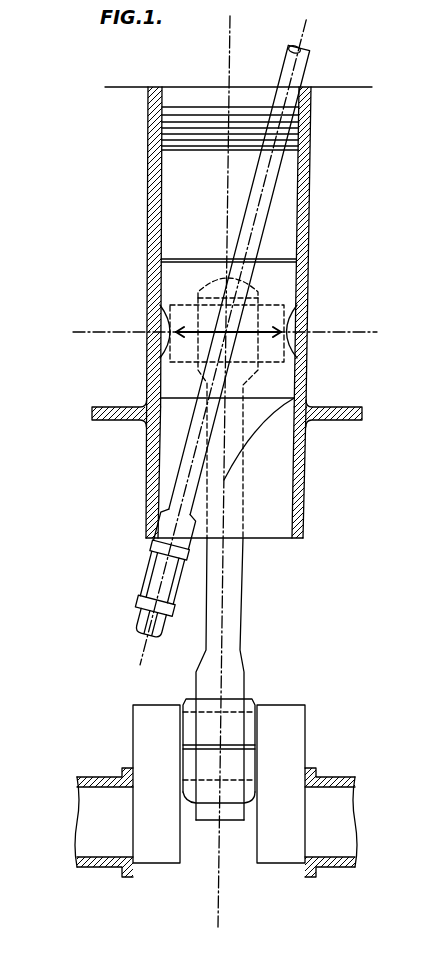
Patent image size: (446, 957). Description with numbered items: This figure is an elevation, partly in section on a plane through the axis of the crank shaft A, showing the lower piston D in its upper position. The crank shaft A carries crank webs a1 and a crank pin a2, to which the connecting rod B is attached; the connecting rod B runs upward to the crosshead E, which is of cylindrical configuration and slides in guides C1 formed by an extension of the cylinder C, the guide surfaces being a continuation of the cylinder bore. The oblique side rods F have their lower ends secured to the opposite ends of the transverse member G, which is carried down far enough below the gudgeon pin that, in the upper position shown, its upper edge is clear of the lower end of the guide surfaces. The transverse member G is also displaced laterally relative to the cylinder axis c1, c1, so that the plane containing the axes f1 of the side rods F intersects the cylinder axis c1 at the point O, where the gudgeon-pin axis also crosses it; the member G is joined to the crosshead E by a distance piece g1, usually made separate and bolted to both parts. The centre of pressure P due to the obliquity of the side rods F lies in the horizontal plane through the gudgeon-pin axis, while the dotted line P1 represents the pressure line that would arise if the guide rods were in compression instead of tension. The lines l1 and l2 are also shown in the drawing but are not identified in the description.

The axis of the cylinder c1 is at (230, 57).
The axis of the side rod f1 is at (300, 45).
The lower piston D is at (168, 182).
The oblique rod F is at (250, 217).
The cylinder C is at (150, 251).
The guide C1 is at (305, 484).
The line of pressure due to obliquity of guide rods in compression P1 is at (192, 328).
The point of intersection O is at (225, 330).
The slot line l2 is at (272, 317).
The transverse axis l1 is at (220, 331).
The connecting rod B is at (197, 343).
The crosshead E is at (168, 378).
The centre of pressure due to obliquity of the side rods P is at (265, 335).
The distance piece g1 is at (165, 448).
The transverse member G is at (155, 575).
The crank pin a2 is at (235, 712).
The crank web a1 is at (140, 730).
The crank shaft A is at (335, 821).